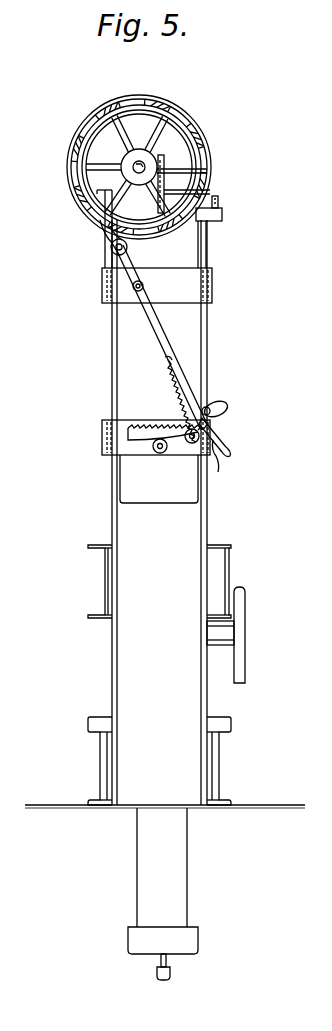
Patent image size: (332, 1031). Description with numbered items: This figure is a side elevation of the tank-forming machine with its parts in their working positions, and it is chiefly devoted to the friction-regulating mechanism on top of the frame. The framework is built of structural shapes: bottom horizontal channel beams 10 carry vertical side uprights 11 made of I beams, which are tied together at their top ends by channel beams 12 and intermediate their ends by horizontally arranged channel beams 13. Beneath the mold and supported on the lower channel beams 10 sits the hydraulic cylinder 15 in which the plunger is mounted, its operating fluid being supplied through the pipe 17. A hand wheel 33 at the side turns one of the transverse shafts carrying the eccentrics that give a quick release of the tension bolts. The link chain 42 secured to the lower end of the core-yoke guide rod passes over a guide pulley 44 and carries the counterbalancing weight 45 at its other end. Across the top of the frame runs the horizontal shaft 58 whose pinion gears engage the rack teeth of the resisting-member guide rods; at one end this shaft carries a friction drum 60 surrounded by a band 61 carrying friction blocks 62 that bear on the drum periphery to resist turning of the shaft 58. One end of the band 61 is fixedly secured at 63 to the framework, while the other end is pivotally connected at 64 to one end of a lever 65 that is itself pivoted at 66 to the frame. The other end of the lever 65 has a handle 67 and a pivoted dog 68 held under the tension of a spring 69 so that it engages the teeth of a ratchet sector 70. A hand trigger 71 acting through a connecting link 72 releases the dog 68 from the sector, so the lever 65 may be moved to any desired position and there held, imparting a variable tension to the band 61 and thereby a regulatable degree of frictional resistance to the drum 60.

The channel beams 10 is at (212, 768).
The vertical side uprights 11 is at (205, 512).
The channel beams 12 is at (95, 206).
The channel beams 13 is at (214, 570).
The hydraulic cylinder 15 is at (180, 871).
The pipe 17 is at (158, 962).
The hand wheels 33 is at (246, 603).
The link chain 42 is at (164, 191).
The guide pulley 44 is at (165, 171).
The counterbalancing weight 45 is at (133, 480).
The horizontal shaft 58 is at (143, 167).
The friction drum 60 is at (104, 120).
The band 61 is at (183, 101).
The friction blocks 62 is at (172, 103).
The fixed securing point 63 is at (219, 201).
The pivotal connection 64 is at (114, 250).
The lever 65 is at (162, 333).
The pivot 66 is at (135, 290).
The handle 67 is at (231, 441).
The pivoted dog 68 is at (209, 408).
The spring 69 is at (176, 393).
The ratchet sector 70 is at (226, 411).
The hand trigger 71 is at (218, 472).
The connecting link 72 is at (195, 421).